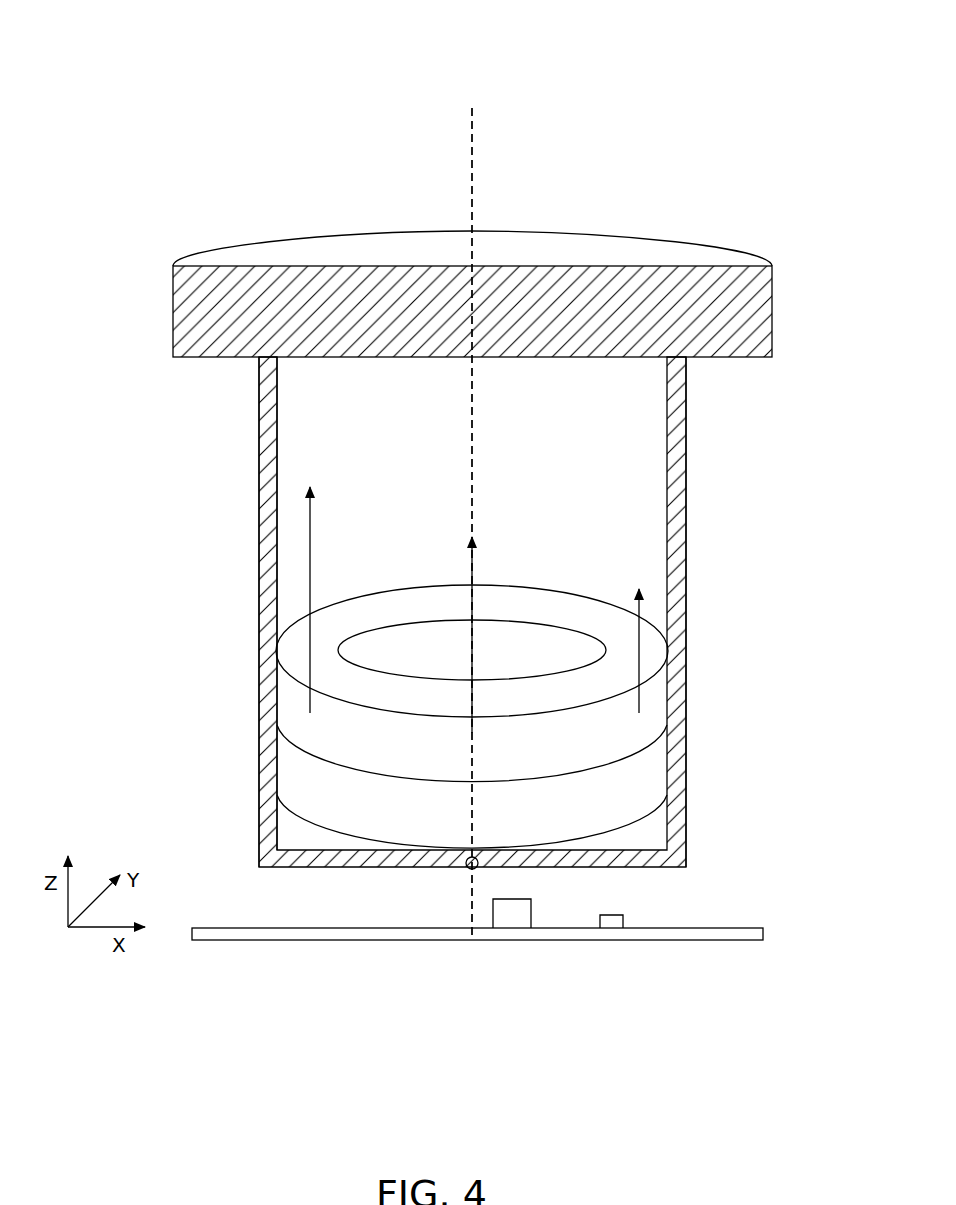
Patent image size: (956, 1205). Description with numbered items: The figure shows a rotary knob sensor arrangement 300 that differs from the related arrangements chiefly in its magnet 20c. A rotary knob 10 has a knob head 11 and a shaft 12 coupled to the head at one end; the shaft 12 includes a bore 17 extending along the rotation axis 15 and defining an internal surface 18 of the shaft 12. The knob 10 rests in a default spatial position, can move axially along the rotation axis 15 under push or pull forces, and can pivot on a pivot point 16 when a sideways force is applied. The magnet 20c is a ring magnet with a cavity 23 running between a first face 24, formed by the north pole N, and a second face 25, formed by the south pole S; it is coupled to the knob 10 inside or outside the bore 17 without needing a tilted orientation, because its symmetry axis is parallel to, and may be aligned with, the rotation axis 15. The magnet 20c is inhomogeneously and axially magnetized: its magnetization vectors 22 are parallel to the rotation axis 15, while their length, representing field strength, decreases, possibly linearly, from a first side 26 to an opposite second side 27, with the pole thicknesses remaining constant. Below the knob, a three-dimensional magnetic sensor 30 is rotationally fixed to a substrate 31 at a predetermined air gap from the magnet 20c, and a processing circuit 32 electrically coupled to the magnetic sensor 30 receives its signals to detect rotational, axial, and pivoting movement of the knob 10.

The rotary knob sensor arrangement 300 is at (166, 55).
The rotary knob 10 is at (176, 262).
The knob head 11 is at (173, 312).
The shaft 12 is at (259, 416).
The rotation axis 15 is at (473, 163).
The pivot point 16 is at (466, 869).
The bore 17 is at (640, 468).
The internal surface 18 is at (281, 471).
The magnet 20c is at (291, 643).
The magnetization vectors 22 is at (310, 545).
The cavity 23 is at (555, 646).
The first face 24 is at (379, 595).
The second face 25 is at (309, 832).
The first side 26 is at (275, 756).
The second side 27 is at (676, 717).
The 3D magnetic sensor 30 is at (610, 921).
The substrate 31 is at (763, 933).
The processing circuit 32 is at (512, 921).